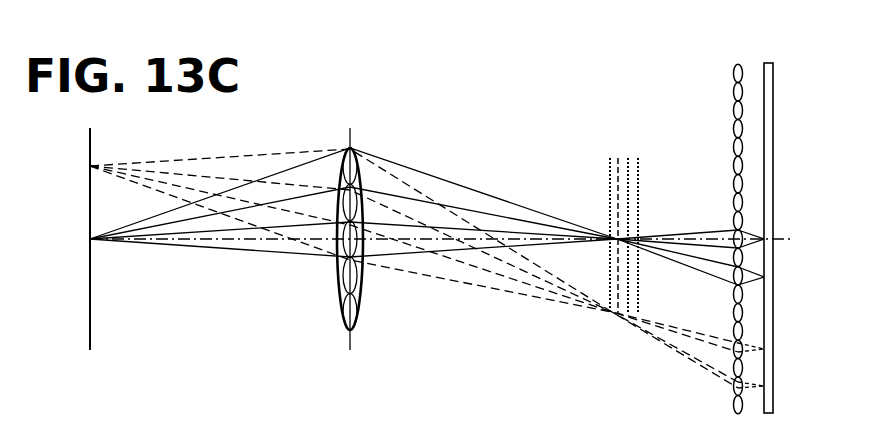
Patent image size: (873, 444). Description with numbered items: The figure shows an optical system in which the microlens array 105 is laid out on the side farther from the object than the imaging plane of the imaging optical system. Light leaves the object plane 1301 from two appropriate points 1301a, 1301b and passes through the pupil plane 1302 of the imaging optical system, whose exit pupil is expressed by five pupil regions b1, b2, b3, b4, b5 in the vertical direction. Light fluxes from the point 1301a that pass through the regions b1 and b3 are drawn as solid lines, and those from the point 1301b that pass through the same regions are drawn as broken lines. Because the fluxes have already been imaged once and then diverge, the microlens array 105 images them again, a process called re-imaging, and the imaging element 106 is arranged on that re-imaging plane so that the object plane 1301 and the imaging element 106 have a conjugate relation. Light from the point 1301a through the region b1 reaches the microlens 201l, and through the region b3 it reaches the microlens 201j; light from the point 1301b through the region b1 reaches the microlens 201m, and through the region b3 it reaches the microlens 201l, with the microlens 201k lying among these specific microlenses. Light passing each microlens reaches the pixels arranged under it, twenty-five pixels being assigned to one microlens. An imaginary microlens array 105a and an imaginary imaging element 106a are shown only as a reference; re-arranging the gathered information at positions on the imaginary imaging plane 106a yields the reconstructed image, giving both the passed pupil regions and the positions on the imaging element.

The object plane 1301 is at (92, 148).
The point on the object 1301a is at (375, 216).
The point on the object 1301b is at (375, 268).
The pupil plane of the imaging optical system 1302 is at (351, 132).
The pupil region b1 is at (346, 146).
The pupil region b2 is at (341, 193).
The pupil region b3 is at (341, 258).
The pupil region b4 is at (341, 290).
The pupil region b5 is at (343, 322).
The imaginary microlens array 105a is at (612, 157).
The imaginary imaging element 106a is at (638, 157).
The microlens array 105 is at (738, 62).
The imaging element 106 is at (773, 62).
The microlens 201j is at (745, 231).
The microlens 201k is at (765, 277).
The microlens 201l is at (745, 343).
The microlens 201m is at (745, 382).